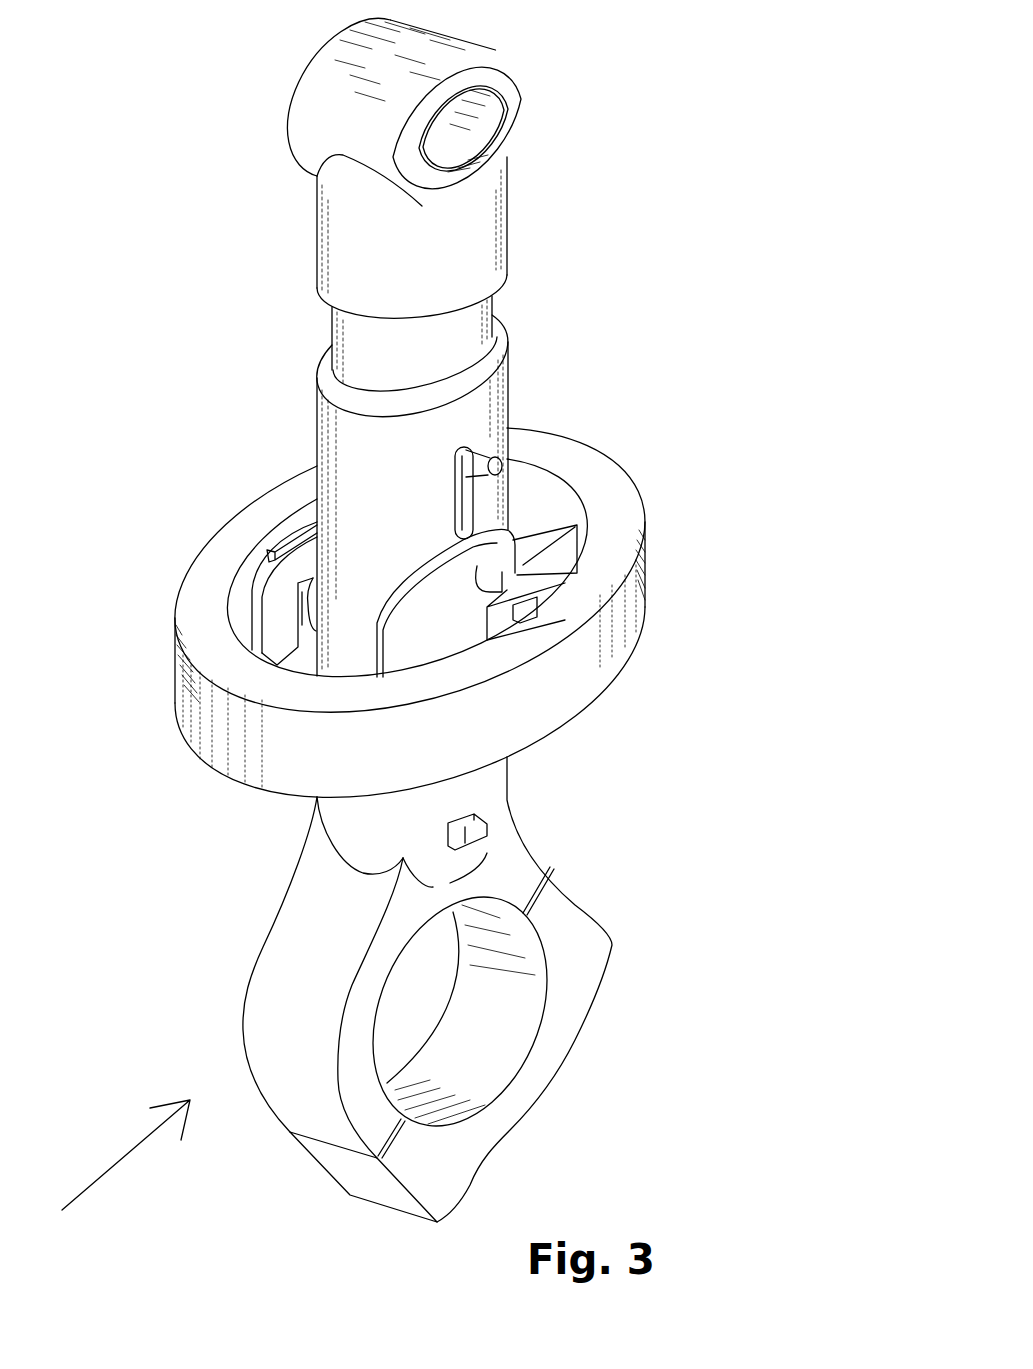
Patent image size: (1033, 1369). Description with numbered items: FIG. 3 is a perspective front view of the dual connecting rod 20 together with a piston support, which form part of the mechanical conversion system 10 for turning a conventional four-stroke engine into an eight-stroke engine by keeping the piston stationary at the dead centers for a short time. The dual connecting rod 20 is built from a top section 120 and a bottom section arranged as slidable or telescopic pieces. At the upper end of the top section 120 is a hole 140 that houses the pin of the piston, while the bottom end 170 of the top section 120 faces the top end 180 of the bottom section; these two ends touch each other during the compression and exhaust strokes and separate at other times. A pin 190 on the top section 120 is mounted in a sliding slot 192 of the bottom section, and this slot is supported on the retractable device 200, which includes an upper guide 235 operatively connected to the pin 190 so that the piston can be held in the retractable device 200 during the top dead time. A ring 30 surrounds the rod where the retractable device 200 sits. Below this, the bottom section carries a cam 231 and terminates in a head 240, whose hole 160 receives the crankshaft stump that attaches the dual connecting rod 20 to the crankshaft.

The mechanical conversion system 10 is at (126, 1180).
The dual connecting rod 20 is at (362, 460).
The ring 30 is at (553, 687).
The top section 120 is at (508, 127).
The hole 140 is at (462, 128).
The hole 160 is at (433, 953).
The bottom end 170 is at (507, 270).
The top end 180 is at (500, 347).
The pin 190 is at (500, 440).
The sliding slot 192 is at (458, 484).
The retractable device 200 is at (463, 633).
The cam 231 is at (493, 833).
The upper guide 235 is at (432, 597).
The head 240 is at (510, 885).